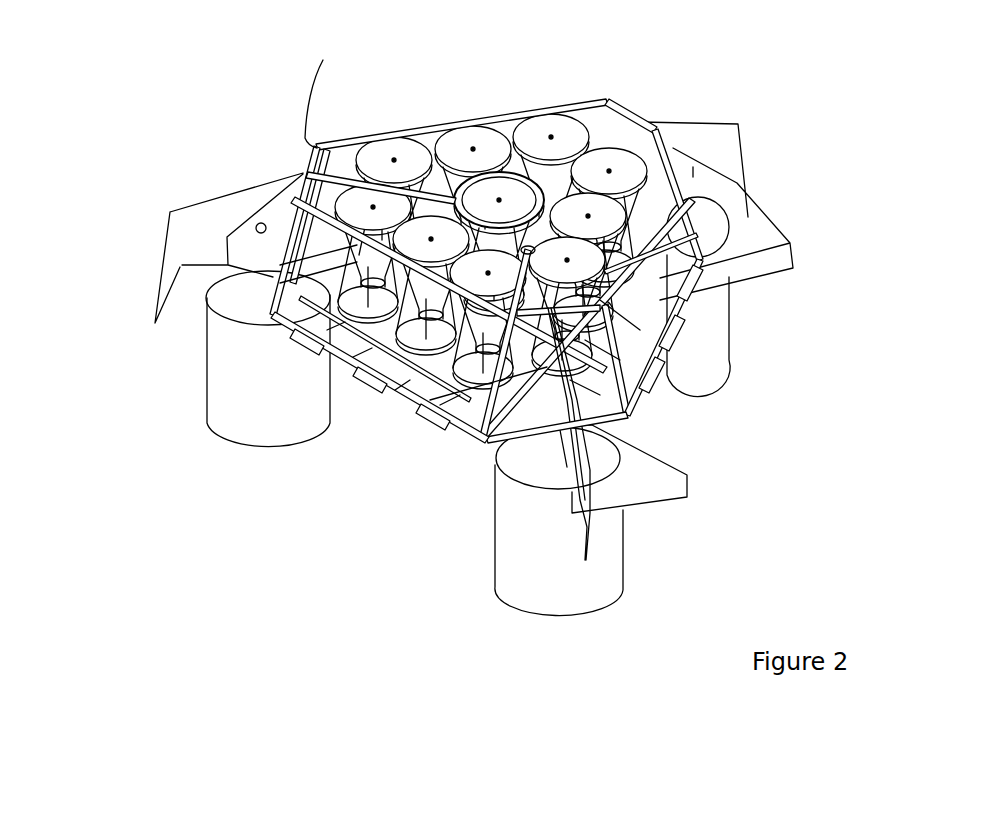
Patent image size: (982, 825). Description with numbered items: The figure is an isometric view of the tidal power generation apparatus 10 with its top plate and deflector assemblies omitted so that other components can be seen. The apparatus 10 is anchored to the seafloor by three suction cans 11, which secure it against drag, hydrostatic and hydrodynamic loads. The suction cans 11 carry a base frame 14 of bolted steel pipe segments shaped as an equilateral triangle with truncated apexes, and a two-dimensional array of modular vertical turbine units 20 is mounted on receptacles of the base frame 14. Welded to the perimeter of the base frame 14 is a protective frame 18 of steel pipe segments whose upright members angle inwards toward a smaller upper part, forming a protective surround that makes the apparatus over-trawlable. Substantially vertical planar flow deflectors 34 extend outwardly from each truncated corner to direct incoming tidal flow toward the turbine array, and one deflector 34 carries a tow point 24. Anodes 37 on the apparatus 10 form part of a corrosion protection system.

The tidal power generation apparatus 10 is at (150, 131).
The suction cans 11 is at (245, 430).
The base frame 14 is at (407, 400).
The protective frame 18 is at (493, 118).
The modular vertical turbine units 20 is at (394, 152).
The tow point 24 is at (259, 224).
The flow deflectors 34 is at (187, 247).
The anodes 37 is at (370, 382).